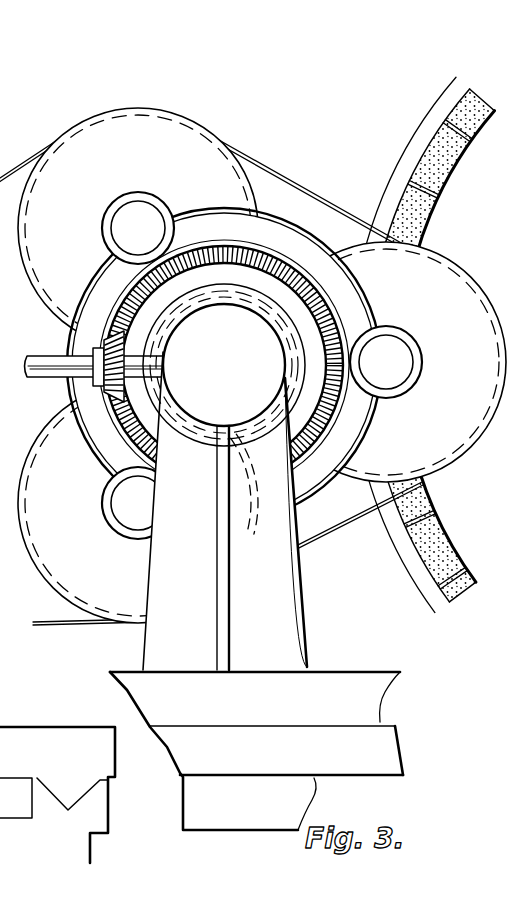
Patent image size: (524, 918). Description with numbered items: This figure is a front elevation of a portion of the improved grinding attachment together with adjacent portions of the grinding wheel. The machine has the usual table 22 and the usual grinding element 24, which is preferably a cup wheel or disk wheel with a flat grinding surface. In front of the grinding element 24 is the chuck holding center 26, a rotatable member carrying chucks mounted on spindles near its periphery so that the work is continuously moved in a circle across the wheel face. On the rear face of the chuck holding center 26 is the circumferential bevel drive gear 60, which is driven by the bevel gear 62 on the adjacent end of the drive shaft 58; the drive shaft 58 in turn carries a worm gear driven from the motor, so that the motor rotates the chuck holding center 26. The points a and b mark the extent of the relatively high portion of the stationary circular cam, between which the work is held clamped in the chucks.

The table 22 is at (0, 727).
The grinding element 24 is at (457, 550).
The chuck holding center 26 is at (253, 237).
The drive shaft 58 is at (50, 378).
The circumferential bevel drive gear 60 is at (220, 305).
The bevel gear 62 is at (100, 340).
The point a is at (162, 360).
The point b is at (162, 415).